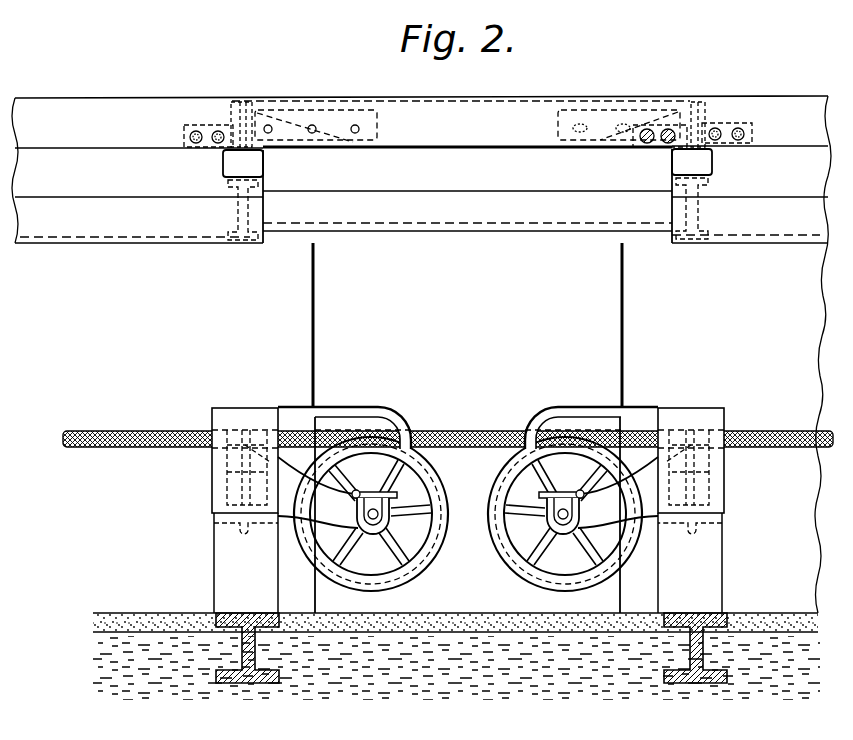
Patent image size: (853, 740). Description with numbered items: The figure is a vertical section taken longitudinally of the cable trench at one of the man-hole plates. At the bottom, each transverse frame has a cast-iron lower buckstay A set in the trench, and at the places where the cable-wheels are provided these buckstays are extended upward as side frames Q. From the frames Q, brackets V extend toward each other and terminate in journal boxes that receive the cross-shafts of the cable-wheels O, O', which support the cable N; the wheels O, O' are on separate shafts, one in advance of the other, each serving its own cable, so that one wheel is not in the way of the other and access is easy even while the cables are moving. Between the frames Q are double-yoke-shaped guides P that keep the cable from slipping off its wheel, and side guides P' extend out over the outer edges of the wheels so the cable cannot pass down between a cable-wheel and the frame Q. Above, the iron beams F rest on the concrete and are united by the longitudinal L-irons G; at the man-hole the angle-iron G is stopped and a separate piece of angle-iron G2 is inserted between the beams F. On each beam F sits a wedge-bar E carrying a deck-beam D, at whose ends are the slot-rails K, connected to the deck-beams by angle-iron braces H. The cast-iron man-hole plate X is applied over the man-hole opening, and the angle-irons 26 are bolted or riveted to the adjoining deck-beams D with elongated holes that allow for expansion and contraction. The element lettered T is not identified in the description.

The slot-rails K is at (421, 111).
The track stringer beam T is at (421, 178).
The longitudinal L-irons G is at (421, 224).
The separate piece of angle-iron G2 is at (450, 191).
The wedge-bar E is at (467, 196).
The iron beams F is at (238, 204).
The deck-beam D is at (245, 118).
The angle-iron braces H is at (200, 124).
The angle-irons 26 is at (334, 86).
The man-hole plate X is at (501, 100).
The double-yoke-shaped guides P is at (465, 460).
The side guides P' is at (468, 418).
The cable N is at (486, 431).
The cable-wheel O is at (371, 514).
The cable-wheel O' is at (565, 514).
The brackets V is at (468, 495).
The side frames Q is at (468, 563).
The buckstay A is at (258, 612).